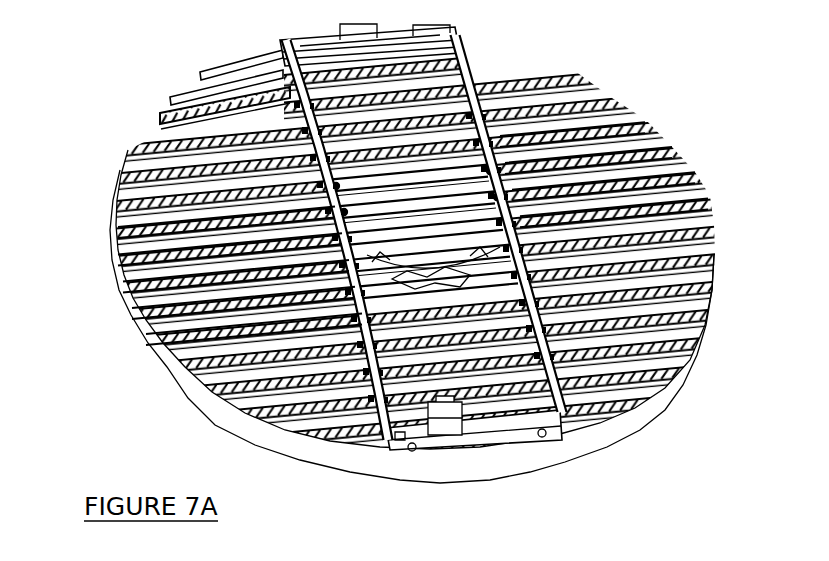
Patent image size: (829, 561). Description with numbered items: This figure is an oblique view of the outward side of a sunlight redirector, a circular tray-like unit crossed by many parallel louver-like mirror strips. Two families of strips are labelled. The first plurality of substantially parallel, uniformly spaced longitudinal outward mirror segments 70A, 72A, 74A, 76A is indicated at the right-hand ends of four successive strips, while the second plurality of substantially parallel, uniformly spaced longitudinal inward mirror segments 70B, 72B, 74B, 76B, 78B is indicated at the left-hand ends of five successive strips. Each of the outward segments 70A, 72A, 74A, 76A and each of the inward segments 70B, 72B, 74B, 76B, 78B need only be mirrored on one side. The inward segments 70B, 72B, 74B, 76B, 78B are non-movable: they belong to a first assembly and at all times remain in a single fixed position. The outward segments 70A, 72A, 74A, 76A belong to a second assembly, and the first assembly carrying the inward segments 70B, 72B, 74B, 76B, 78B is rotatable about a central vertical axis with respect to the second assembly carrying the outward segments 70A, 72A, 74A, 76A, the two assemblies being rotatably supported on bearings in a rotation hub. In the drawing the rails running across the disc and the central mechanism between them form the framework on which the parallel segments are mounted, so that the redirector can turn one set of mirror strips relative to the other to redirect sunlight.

The outward mirror segment 70A is at (640, 108).
The outward mirror segment 72A is at (666, 139).
The outward mirror segment 74A is at (688, 163).
The outward mirror segment 76A is at (703, 187).
The inward mirror segment 70B is at (114, 222).
The inward mirror segment 72B is at (112, 250).
The inward mirror segment 74B is at (114, 276).
The inward mirror segment 76B is at (124, 300).
The inward mirror segment 78B is at (143, 325).